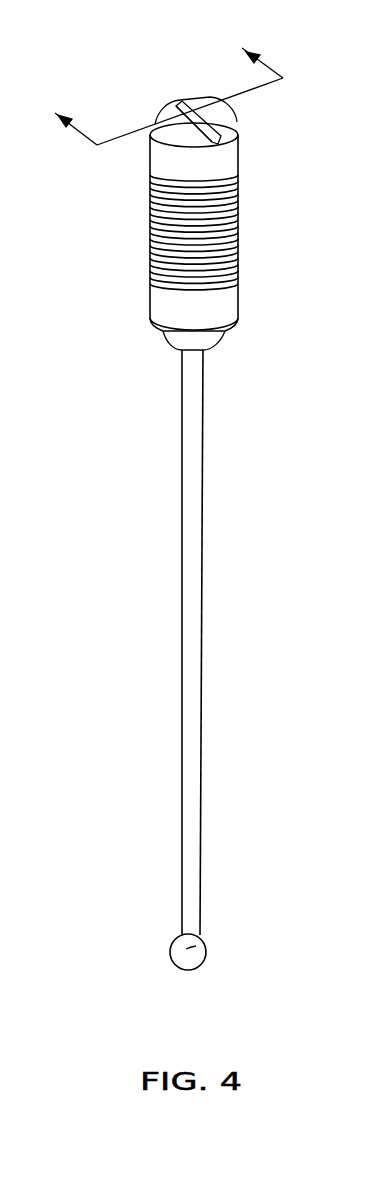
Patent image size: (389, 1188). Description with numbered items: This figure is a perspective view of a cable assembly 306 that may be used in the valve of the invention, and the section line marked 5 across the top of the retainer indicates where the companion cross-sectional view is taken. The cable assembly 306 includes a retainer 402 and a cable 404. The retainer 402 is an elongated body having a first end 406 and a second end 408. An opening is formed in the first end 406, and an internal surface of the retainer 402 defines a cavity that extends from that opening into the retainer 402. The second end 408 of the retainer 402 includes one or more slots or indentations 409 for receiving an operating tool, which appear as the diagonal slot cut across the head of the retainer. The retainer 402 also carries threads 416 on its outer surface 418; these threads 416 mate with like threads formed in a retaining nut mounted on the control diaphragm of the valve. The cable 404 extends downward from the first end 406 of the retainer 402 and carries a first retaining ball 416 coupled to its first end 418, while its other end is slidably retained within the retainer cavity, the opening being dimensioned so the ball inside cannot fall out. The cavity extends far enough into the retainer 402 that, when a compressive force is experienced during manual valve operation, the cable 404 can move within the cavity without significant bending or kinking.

The cable assembly 306 is at (150, 67).
The retainer 402 is at (222, 324).
The cable 404 is at (196, 549).
The first end 406 is at (181, 341).
The second end 408 is at (208, 96).
The slots or indentations 409 is at (183, 102).
The threads / first retaining ball 416 is at (240, 215).
The outer surface / first end 418 is at (182, 920).
The section line 5- 5 is at (161, 81).